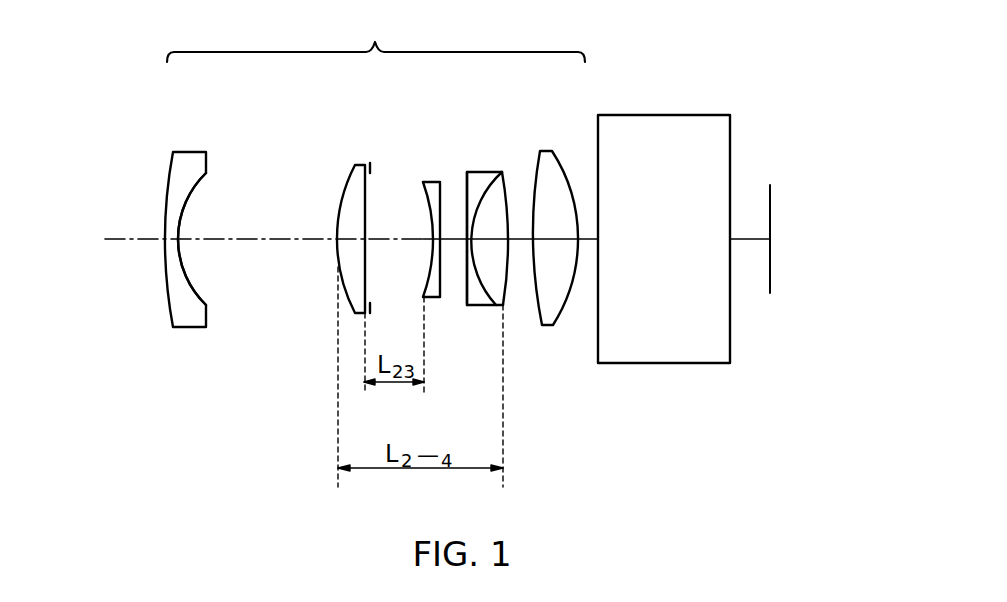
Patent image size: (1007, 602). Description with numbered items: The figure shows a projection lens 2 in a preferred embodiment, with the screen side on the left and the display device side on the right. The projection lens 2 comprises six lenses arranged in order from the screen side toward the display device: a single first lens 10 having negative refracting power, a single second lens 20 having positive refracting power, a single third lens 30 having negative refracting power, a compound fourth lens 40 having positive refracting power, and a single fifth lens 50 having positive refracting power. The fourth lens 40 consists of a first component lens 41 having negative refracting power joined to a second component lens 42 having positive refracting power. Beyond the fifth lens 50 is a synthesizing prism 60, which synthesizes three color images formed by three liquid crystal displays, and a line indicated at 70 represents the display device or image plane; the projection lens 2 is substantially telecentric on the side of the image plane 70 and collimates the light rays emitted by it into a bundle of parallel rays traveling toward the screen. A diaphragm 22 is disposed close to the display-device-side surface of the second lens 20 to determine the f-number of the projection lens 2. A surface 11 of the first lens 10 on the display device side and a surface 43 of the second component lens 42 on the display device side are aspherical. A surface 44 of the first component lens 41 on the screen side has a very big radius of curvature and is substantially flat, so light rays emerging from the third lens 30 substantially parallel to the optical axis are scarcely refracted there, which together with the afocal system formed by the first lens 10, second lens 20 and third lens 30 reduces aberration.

The projection lens 2 is at (376, 35).
The first lens 10 is at (195, 150).
The surface 11 is at (195, 188).
The second lens 20 is at (360, 163).
The diaphragm 22 is at (370, 168).
The third lens 30 is at (435, 180).
The fourth lens 40 is at (458, 110).
The first component lens 41 is at (482, 172).
The second component lens 42 is at (498, 172).
The surface 43 is at (506, 283).
The surface 44 is at (466, 295).
The fifth lens 50 is at (548, 150).
The synthesizing prism 60 is at (700, 115).
The display device (image plane) 70 is at (771, 197).